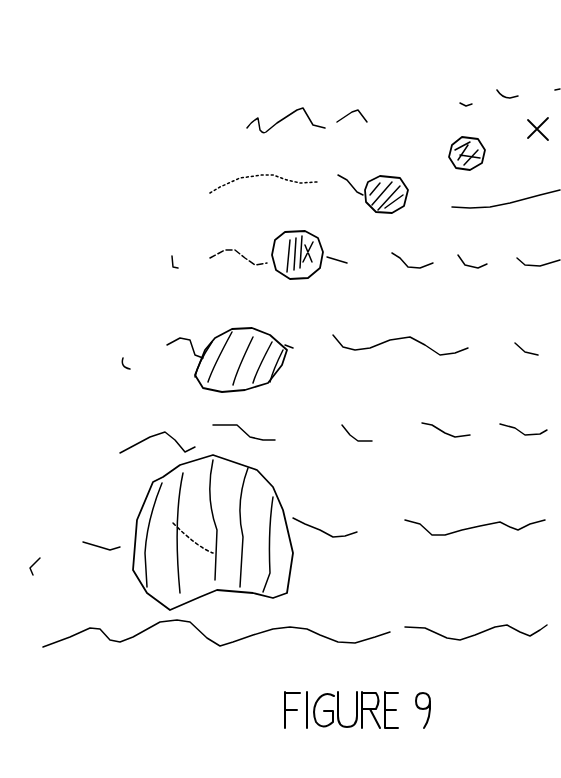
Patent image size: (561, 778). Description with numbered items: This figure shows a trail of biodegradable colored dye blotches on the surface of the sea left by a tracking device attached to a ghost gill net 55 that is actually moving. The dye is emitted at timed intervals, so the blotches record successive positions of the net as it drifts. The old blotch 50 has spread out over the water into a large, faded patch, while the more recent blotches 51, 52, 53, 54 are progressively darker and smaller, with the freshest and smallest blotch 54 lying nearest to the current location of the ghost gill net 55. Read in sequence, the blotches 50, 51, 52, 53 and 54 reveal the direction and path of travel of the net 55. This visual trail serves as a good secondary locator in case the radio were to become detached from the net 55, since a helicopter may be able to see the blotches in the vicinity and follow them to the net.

The old blotch 50 is at (145, 488).
The more recent blotch 51 is at (203, 323).
The more recent blotch 52 is at (268, 232).
The more recent blotch 53 is at (377, 170).
The more recent blotch 54 is at (450, 130).
The ghost gill net 55 is at (533, 112).